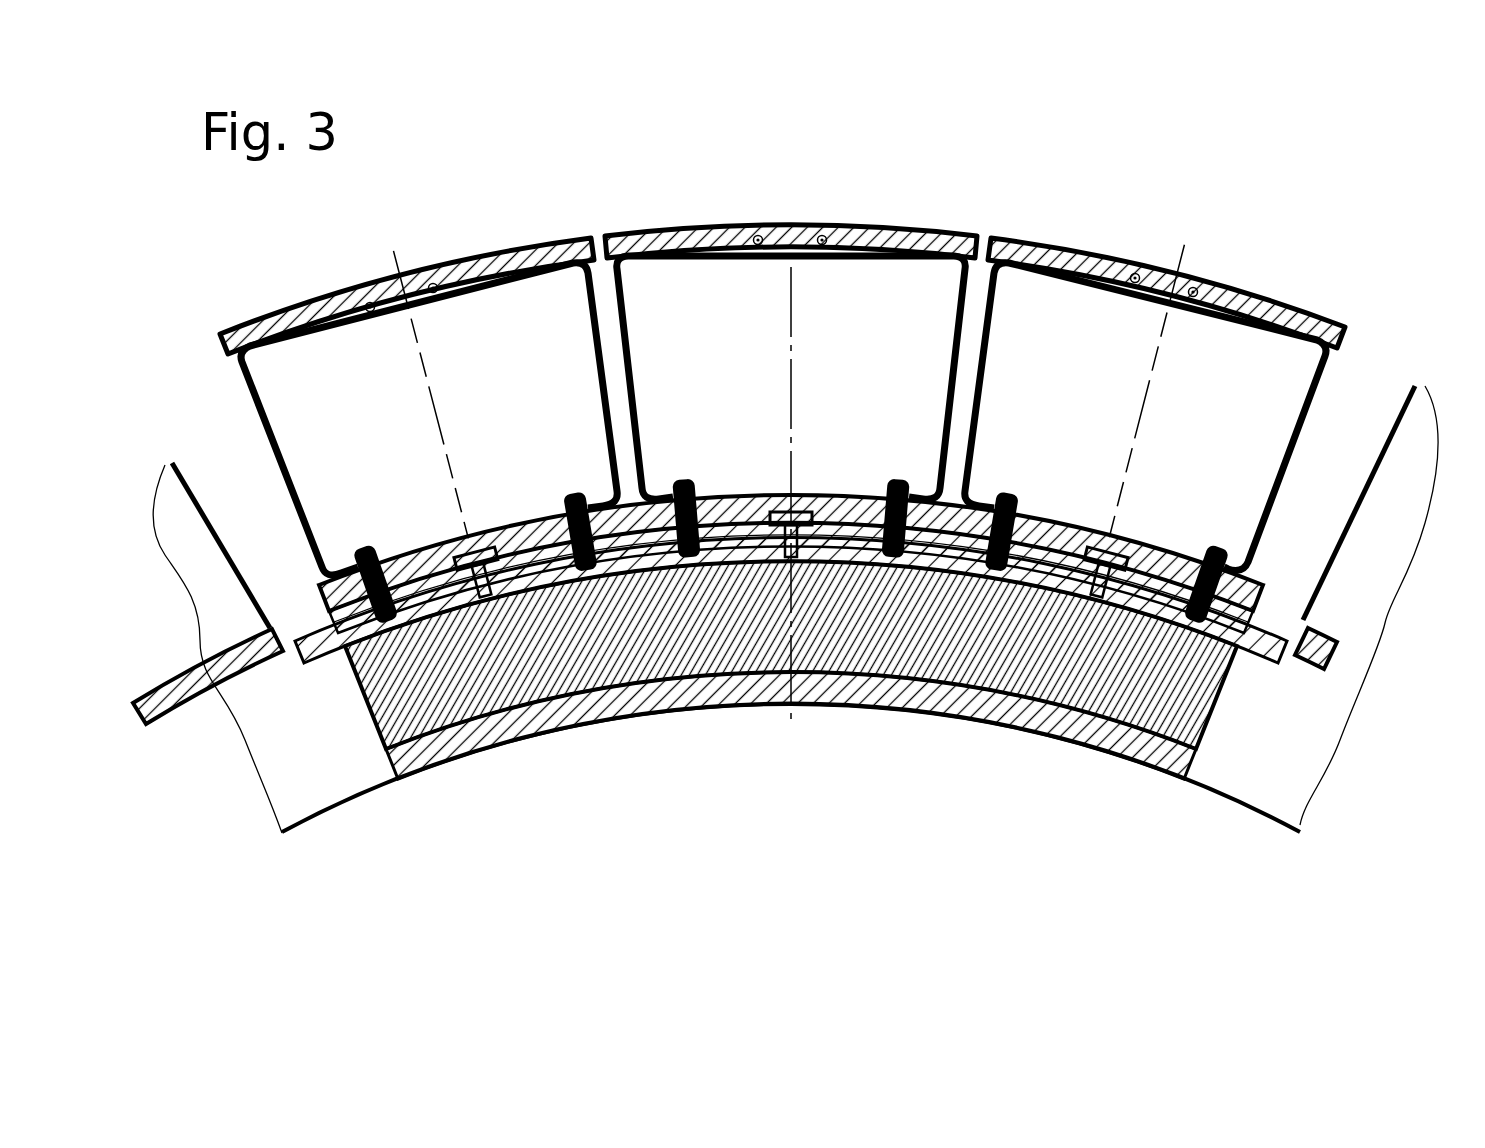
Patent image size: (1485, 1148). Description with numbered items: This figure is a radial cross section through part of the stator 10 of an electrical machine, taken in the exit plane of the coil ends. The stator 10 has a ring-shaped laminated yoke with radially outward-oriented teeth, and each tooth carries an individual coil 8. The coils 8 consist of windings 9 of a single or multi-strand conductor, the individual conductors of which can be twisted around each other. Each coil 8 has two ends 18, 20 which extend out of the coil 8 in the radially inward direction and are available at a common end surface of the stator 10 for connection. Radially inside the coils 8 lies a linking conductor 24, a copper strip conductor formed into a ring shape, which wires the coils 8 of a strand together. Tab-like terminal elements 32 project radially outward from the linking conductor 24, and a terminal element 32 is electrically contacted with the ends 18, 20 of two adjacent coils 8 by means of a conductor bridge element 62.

The coil 8 is at (1225, 212).
The windings 9 is at (1088, 340).
The stator 10 is at (898, 775).
The coil end 18 is at (352, 547).
The coil end 20 is at (573, 487).
The linking conductor 24 is at (420, 700).
The terminal element 32 is at (487, 537).
The conductor bridge element 62 is at (192, 690).